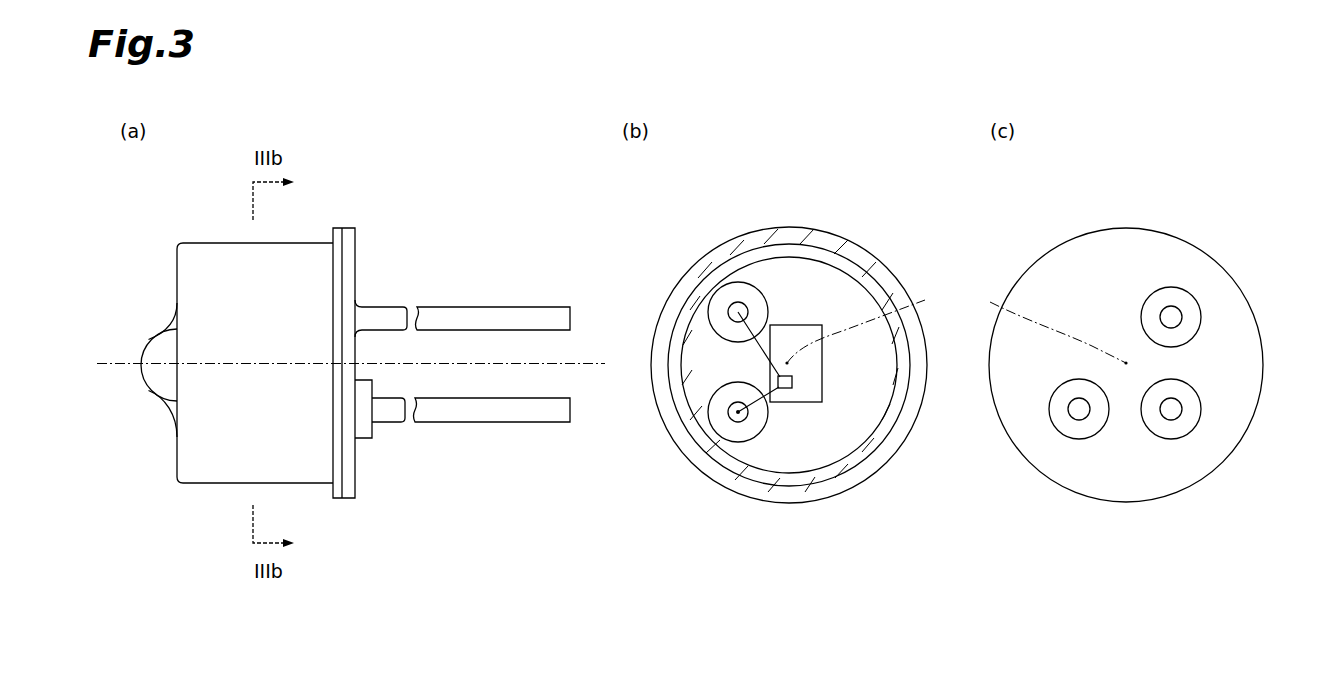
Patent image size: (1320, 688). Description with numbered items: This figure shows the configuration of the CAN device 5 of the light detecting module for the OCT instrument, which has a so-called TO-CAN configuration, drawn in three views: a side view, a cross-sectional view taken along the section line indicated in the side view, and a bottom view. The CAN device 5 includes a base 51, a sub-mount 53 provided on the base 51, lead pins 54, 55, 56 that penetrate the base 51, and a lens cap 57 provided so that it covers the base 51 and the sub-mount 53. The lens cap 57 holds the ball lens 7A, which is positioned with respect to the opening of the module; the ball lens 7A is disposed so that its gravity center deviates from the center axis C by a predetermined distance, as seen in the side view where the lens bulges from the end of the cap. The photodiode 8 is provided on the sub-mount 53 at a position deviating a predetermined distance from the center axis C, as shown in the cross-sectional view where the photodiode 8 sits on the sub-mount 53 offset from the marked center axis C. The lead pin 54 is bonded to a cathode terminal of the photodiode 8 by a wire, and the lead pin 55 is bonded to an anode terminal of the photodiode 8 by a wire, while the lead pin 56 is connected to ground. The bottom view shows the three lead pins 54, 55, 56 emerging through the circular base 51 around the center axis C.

The CAN device 5 is at (385, 209).
The ball lens 7A is at (152, 342).
The photodiode 8 is at (787, 393).
The base 51 is at (353, 486).
The sub-mount 53 is at (793, 337).
The lead pin 54 is at (738, 434).
The lead pin 55 is at (487, 318).
The lead pin 56 is at (484, 410).
The lens cap 57 is at (338, 228).
The center axis C is at (113, 368).